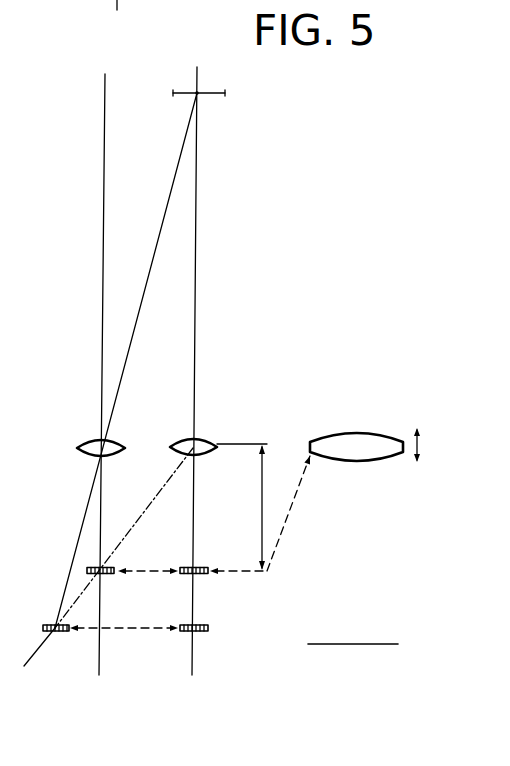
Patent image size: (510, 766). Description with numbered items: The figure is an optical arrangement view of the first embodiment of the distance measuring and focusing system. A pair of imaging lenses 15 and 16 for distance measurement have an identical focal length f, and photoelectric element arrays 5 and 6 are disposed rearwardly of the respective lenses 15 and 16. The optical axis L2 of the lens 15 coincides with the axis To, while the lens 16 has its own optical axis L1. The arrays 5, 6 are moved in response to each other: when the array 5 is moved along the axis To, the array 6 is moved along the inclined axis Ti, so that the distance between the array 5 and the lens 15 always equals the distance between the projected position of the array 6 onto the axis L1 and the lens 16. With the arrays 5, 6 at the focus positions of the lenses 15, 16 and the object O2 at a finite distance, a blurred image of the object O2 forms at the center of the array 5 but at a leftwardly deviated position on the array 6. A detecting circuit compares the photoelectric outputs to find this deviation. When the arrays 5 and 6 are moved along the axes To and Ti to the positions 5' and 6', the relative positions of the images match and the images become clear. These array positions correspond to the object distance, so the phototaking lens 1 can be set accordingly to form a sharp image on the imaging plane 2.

The phototaking lens 1 is at (373, 452).
The imaging plane 2 is at (352, 645).
The photoelectric element array 5 is at (198, 541).
The position of array 5 5' is at (208, 610).
The photoelectric element array 6 is at (119, 550).
The position of array 6 6' is at (43, 610).
The imaging lens for distance measurement 15 is at (206, 440).
The imaging lens for distance measurement 16 is at (117, 441).
The optical axis of distance measuring lens 16 L1 is at (103, 330).
The optical axis of distance measuring lens 15 L2 is at (196, 292).
The axis To is at (196, 341).
The axis Ti is at (38, 645).
The object O2 is at (200, 78).
The focal length f is at (242, 507).